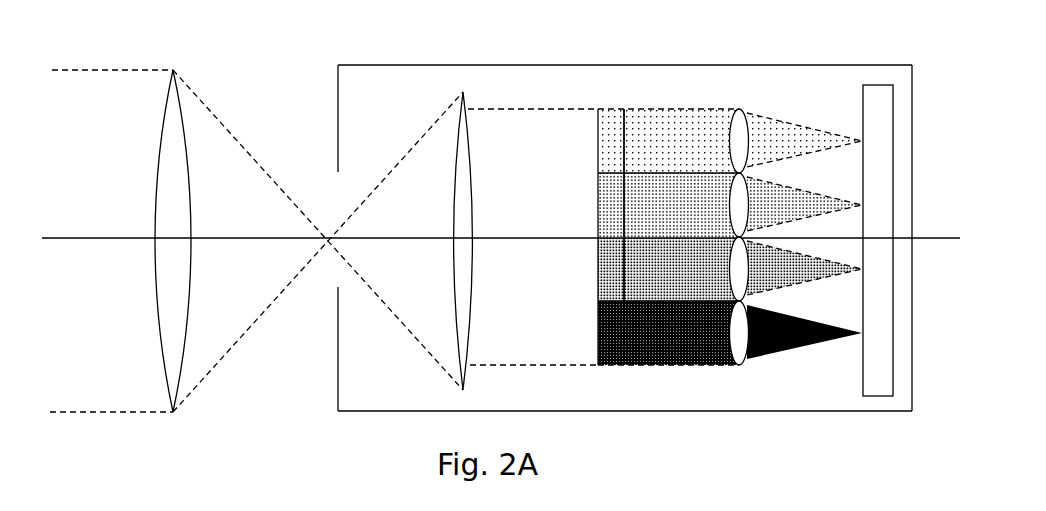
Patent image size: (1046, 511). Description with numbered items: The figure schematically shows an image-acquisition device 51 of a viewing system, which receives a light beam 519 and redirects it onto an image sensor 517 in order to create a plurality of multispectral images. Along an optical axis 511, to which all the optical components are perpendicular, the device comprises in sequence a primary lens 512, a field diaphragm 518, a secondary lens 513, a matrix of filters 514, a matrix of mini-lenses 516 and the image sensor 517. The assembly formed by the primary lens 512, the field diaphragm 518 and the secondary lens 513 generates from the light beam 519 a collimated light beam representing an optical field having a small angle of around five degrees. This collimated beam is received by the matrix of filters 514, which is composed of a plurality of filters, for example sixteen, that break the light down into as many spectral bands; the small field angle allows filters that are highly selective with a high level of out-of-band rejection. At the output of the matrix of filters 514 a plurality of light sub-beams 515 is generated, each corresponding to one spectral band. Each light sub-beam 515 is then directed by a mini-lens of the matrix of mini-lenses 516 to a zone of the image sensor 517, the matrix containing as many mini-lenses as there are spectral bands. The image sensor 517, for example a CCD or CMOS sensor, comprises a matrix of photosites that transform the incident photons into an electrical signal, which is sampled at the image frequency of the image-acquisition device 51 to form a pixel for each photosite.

The image-acquisition device 51 is at (528, 56).
The optical axis 511 is at (72, 235).
The primary lens 512 is at (175, 69).
The secondary lens 513 is at (477, 204).
The matrix of filters 514 is at (615, 109).
The plurality of light sub-beams 515 is at (678, 109).
The matrix of mini-lenses 516 is at (743, 109).
The image sensor 517 is at (884, 74).
The field diaphragm 518 is at (341, 178).
The light beam 519 is at (105, 66).